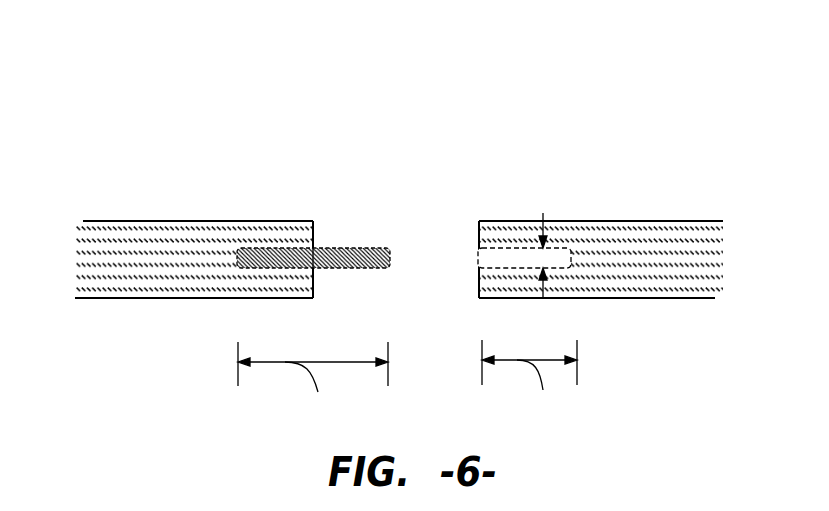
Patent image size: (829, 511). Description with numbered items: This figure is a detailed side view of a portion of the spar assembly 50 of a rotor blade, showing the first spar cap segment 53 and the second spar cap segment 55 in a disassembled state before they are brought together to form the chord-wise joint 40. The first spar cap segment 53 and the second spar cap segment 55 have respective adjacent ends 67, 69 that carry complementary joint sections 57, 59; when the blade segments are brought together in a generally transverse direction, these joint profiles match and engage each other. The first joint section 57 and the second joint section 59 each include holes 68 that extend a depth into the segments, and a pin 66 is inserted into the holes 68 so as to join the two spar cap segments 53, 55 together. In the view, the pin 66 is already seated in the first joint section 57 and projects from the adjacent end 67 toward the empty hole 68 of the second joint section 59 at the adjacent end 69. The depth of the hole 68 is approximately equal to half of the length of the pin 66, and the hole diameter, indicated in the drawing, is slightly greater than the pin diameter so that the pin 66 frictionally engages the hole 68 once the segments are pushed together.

The joint 40 is at (393, 175).
The spar assembly 50 is at (189, 180).
The first spar cap segment 53 is at (146, 248).
The second spar cap segment 55 is at (690, 248).
The first joint section 57 is at (327, 284).
The second joint section 59 is at (468, 232).
The pin 66 is at (289, 259).
The adjacent end 67 is at (315, 233).
The hole 68 is at (525, 260).
The adjacent end 69 is at (480, 280).